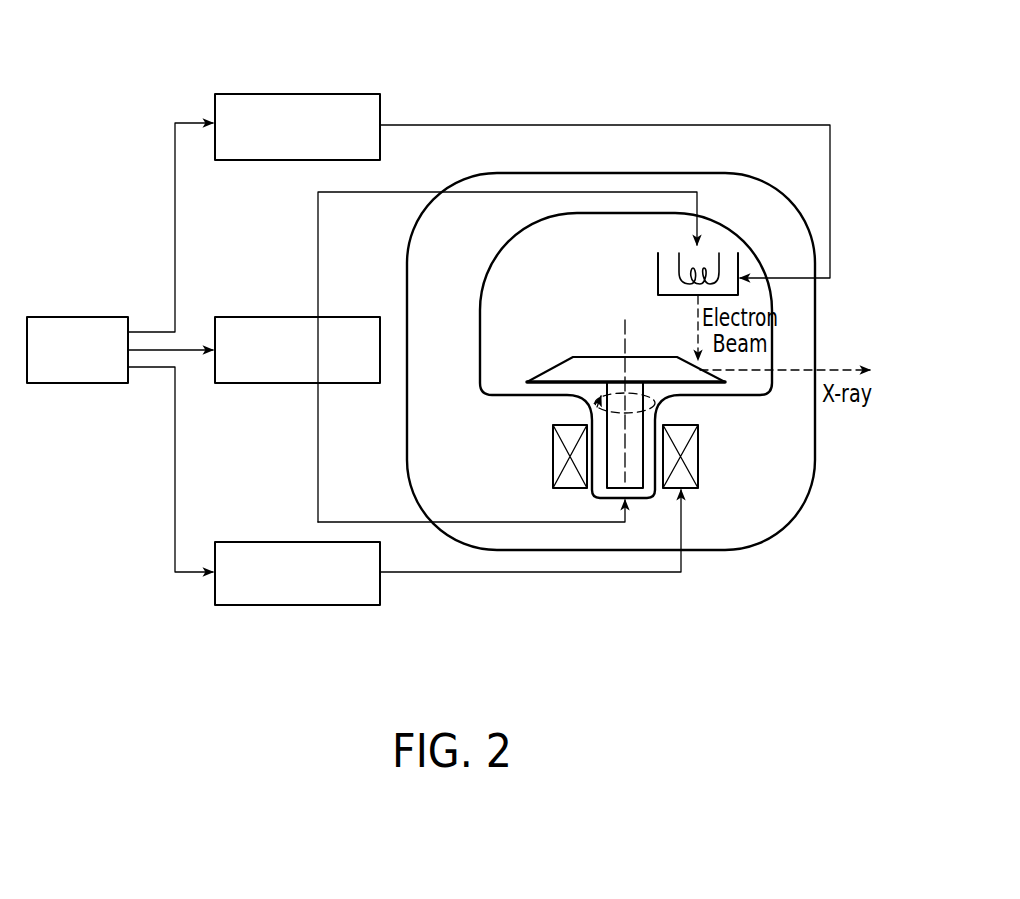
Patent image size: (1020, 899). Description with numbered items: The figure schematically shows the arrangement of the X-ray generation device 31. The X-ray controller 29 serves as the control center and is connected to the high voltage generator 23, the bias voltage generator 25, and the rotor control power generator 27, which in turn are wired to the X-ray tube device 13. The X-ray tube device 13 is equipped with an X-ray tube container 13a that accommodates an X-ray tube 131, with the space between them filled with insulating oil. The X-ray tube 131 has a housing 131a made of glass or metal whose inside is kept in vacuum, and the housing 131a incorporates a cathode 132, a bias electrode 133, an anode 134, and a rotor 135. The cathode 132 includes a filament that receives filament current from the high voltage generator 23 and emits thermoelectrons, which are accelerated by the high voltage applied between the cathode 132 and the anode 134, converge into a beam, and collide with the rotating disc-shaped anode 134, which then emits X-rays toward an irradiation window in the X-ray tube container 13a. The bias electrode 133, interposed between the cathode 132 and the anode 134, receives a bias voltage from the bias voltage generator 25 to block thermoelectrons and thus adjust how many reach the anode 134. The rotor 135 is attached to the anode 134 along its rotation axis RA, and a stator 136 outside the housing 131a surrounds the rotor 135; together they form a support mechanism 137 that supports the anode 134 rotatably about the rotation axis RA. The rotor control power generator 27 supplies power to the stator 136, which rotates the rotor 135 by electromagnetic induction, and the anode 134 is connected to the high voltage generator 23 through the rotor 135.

The X-ray generation device 31 is at (452, 76).
The bias voltage generator 25 is at (232, 161).
The high voltage generator 23 is at (240, 384).
The rotor control power generator 27 is at (320, 606).
The X-ray controller 29 is at (75, 384).
The X-ray tube device 13 is at (627, 399).
The X-ray tube container 13a is at (795, 506).
The X-ray tube 131 is at (591, 355).
The housing 131a is at (511, 242).
The cathode 132 is at (678, 256).
The bias electrode 133 is at (658, 278).
The anode 134 is at (594, 365).
The rotor 135 is at (632, 444).
The stator 136 is at (560, 457).
The support mechanism 137 is at (651, 435).
The rotation axis RA is at (626, 336).